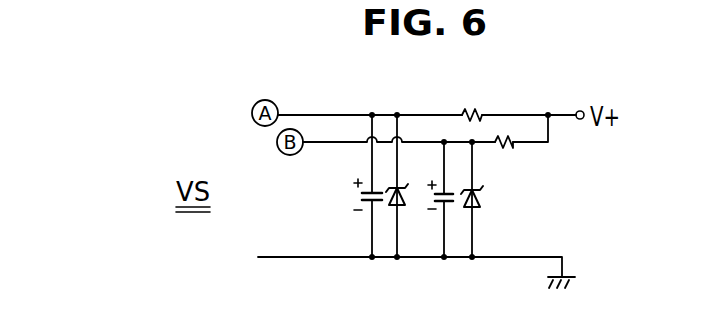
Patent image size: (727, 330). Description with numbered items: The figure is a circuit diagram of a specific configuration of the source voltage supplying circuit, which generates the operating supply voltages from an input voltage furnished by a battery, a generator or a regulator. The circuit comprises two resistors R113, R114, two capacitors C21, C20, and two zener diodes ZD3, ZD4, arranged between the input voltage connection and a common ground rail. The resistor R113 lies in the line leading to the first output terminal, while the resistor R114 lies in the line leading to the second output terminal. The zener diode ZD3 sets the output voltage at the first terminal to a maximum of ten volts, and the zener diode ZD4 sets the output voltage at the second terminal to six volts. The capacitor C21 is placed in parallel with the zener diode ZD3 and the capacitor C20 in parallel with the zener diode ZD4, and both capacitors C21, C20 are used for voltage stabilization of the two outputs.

The resistor R113 is at (472, 102).
The resistor R114 is at (505, 148).
The capacitor C21 is at (363, 202).
The capacitor C20 is at (447, 206).
The zener diode ZD3 is at (392, 189).
The zener diode ZD4 is at (482, 197).